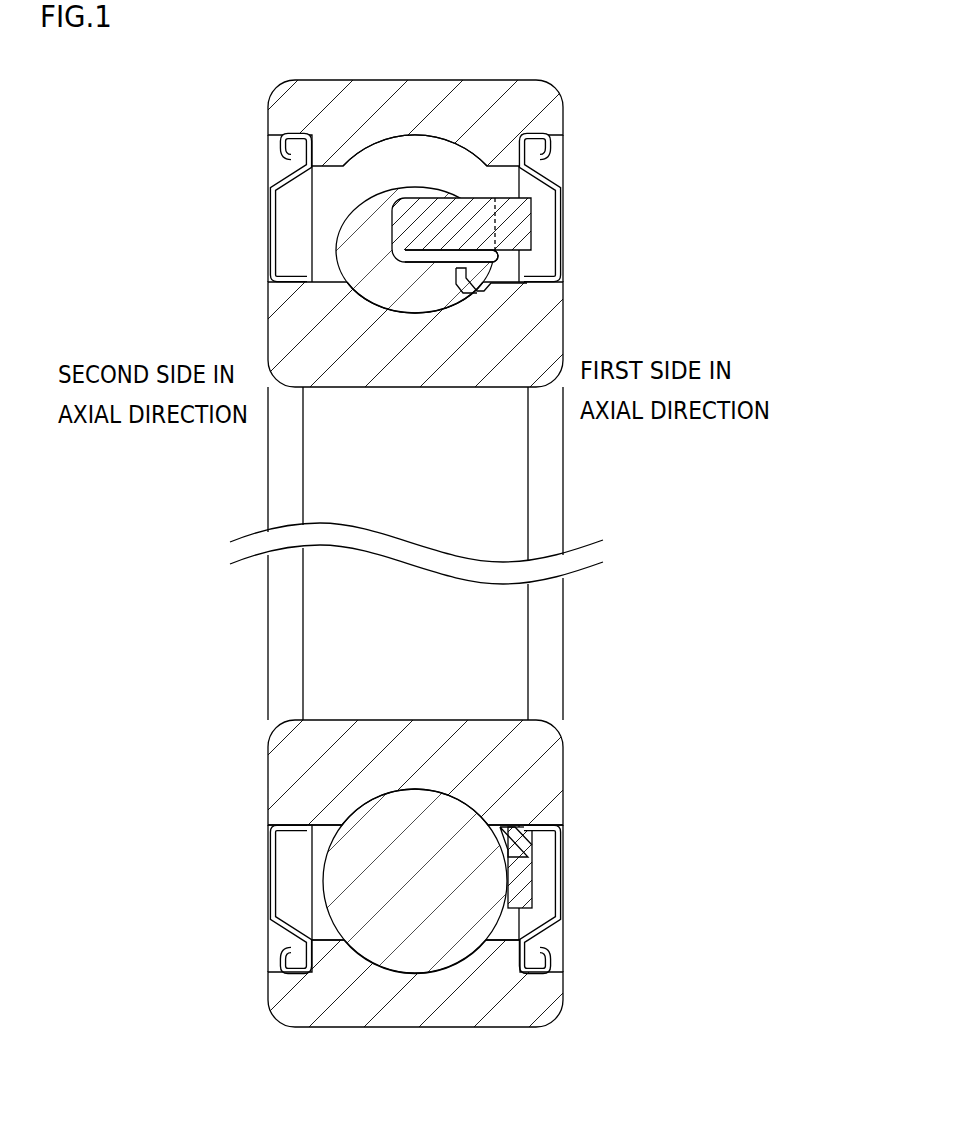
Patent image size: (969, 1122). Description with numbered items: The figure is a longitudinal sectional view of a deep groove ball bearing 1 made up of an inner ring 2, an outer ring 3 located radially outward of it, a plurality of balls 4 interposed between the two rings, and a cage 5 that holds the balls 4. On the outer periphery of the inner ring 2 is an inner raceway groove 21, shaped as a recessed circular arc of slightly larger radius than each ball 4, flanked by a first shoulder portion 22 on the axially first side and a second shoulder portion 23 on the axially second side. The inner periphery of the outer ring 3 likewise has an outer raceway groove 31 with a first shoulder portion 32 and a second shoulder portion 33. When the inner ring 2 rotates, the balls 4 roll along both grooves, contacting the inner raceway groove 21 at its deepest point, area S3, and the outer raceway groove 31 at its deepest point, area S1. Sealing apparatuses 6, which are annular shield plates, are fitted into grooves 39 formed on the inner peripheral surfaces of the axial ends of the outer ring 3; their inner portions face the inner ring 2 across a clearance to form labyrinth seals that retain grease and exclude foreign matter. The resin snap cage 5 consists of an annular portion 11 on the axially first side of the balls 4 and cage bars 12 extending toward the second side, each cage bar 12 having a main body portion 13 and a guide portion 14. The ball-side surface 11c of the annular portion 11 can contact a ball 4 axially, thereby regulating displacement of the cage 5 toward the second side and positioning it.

The ball bearing 1 is at (513, 76).
The inner ring 2 is at (553, 311).
The outer ring 3 is at (553, 118).
The ball 4 is at (378, 215).
The cage 5 is at (482, 153).
The sealing apparatus 6 is at (269, 220).
The annular portion 11 is at (526, 240).
The ball-side surface 11c is at (506, 880).
The cage bar 12 is at (466, 153).
The main body portion 13 is at (430, 225).
The guide portion 14 is at (464, 285).
The inner raceway groove 21 is at (443, 798).
The first shoulder portion 22 is at (524, 810).
The second shoulder portion 23 is at (308, 810).
The outer raceway groove 31 is at (442, 973).
The first shoulder portion 32 is at (508, 960).
The second shoulder portion 33 is at (328, 958).
The groove 39 is at (283, 963).
The area S1 is at (414, 140).
The area S3 is at (414, 316).